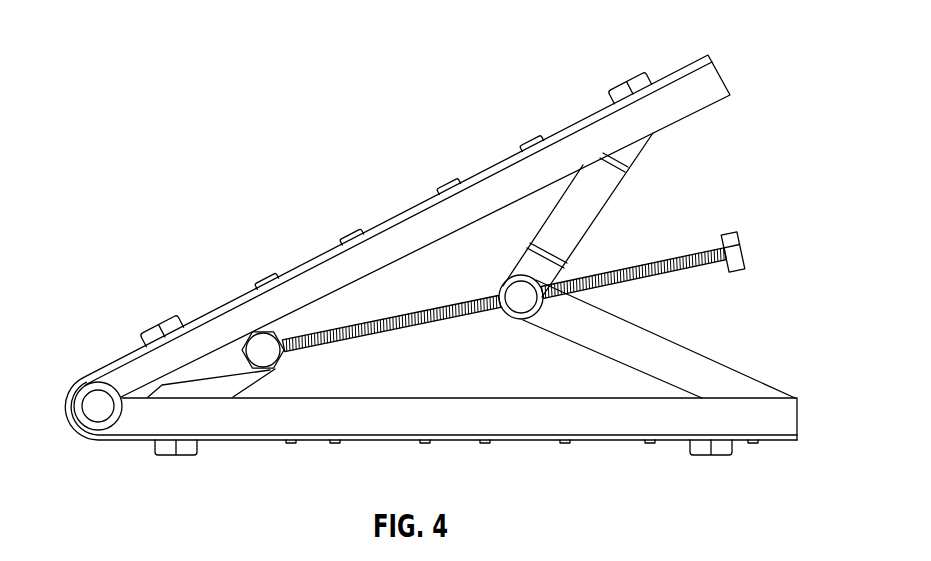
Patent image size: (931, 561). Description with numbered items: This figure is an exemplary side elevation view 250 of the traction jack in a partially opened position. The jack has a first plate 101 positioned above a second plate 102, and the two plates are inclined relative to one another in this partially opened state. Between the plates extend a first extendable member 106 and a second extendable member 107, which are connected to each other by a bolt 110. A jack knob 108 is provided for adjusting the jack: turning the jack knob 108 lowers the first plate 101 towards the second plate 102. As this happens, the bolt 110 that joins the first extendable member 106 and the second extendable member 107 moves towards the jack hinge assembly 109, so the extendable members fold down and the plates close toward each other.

The side elevation view 250 is at (150, 102).
The first plate 101 is at (706, 84).
The second plate 102 is at (742, 424).
The first extendable member 106 is at (589, 206).
The second extendable member 107 is at (681, 353).
The jack knob 108 is at (740, 250).
The jack hinge assembly 109 is at (212, 373).
The bolt 110 is at (514, 290).